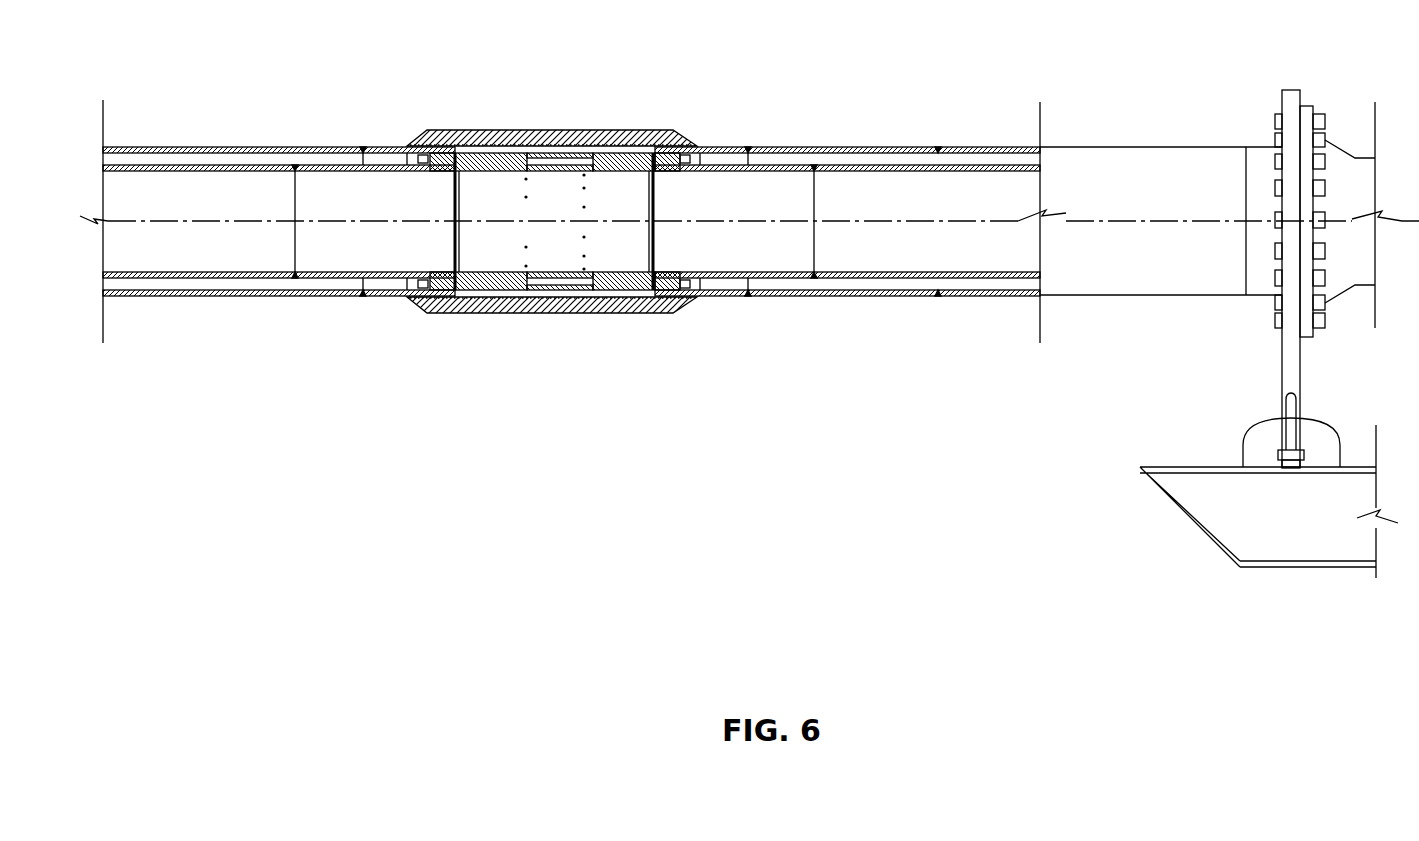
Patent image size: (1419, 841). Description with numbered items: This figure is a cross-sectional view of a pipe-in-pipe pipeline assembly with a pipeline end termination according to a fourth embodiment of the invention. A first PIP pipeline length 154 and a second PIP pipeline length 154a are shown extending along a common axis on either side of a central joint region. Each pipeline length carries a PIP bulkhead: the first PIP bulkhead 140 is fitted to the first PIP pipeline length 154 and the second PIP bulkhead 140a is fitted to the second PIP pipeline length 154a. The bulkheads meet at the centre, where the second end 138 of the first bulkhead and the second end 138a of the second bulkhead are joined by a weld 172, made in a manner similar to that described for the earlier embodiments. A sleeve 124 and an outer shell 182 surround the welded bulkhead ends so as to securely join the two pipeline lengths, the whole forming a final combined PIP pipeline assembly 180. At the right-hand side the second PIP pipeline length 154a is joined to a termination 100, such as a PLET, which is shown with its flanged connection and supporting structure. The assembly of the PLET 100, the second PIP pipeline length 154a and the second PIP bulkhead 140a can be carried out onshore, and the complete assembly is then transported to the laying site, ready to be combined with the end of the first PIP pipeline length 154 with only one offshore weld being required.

The termination 100 is at (1290, 88).
The sleeve 124 is at (617, 165).
The second end 138 is at (470, 140).
The second end 138a is at (637, 136).
The PIP bulkhead 140 is at (372, 108).
The PIP bulkhead 140a is at (722, 108).
The first PIP pipeline length 154 is at (165, 146).
The second PIP pipeline length 154a is at (987, 146).
The weld 172 is at (552, 146).
The combined PIP pipeline assembly 180 is at (548, 352).
The outer shell 182 is at (643, 314).